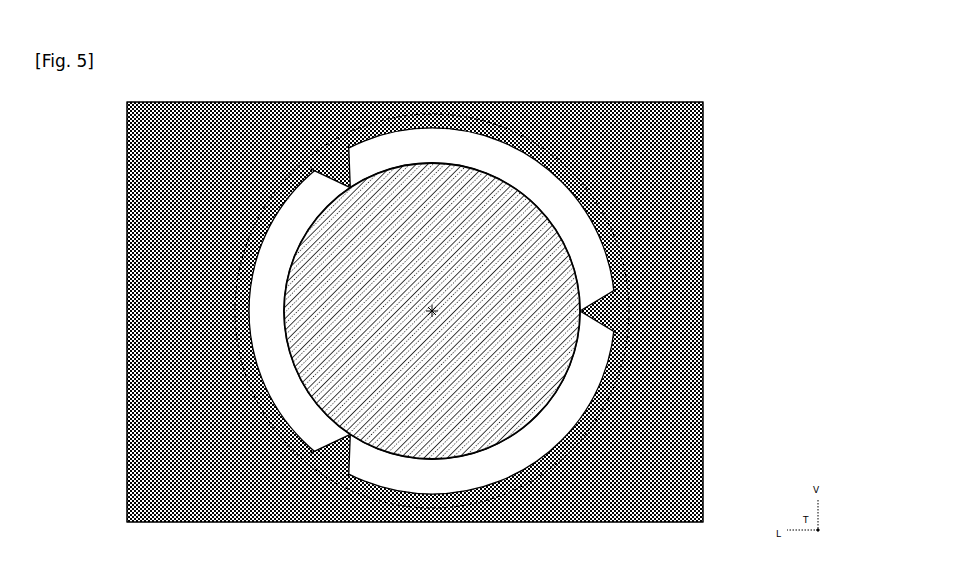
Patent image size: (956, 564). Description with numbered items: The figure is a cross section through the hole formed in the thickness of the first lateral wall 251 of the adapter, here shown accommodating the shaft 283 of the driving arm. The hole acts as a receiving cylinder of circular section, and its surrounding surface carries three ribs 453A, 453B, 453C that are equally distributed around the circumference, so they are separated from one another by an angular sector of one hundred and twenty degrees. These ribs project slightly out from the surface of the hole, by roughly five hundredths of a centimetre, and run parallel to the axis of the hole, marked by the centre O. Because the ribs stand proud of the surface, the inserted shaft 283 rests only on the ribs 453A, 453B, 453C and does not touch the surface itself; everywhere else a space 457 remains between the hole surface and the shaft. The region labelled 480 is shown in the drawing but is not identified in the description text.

The shaft 283 is at (612, 228).
The first lateral wall 251 is at (227, 446).
The bearing seat 480 is at (660, 355).
The space 457 is at (548, 210).
The rib 453A is at (598, 318).
The rib 453B is at (350, 437).
The rib 453C is at (350, 187).
The center axis O is at (233, 305).